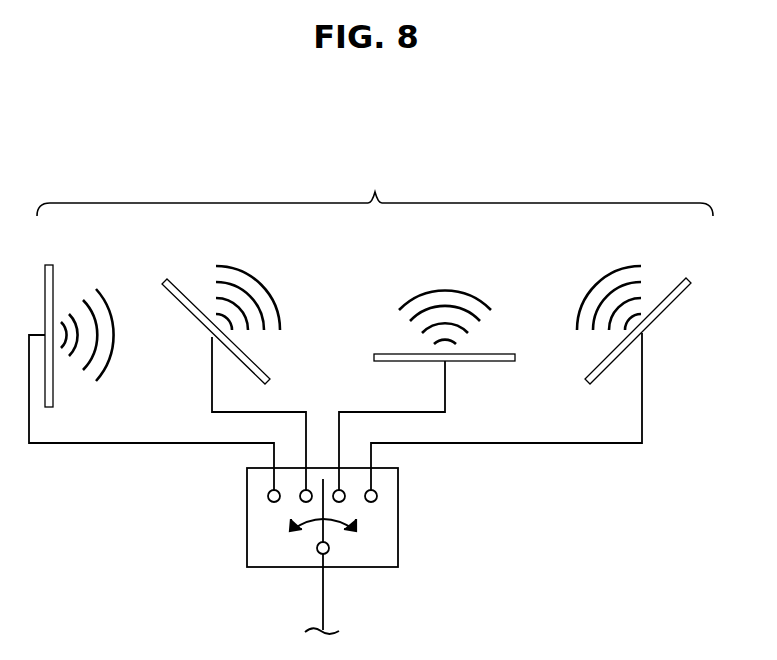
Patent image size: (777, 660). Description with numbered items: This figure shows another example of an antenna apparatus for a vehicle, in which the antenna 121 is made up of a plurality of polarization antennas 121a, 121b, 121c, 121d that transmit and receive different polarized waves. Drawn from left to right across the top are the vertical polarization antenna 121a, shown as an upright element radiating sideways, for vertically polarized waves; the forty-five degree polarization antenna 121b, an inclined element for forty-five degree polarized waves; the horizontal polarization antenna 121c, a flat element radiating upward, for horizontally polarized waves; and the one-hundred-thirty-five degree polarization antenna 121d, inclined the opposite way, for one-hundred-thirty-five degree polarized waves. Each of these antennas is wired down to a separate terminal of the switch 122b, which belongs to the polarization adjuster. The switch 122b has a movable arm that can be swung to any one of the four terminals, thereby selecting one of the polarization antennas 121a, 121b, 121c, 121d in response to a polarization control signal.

The antenna 121 is at (375, 189).
The vertical polarization antenna 121a is at (48, 265).
The 45 degree polarization antenna 121b is at (165, 281).
The horizontal polarization antenna 121c is at (383, 353).
The 135 degree polarization antenna 121d is at (672, 286).
The switch 122b is at (398, 518).